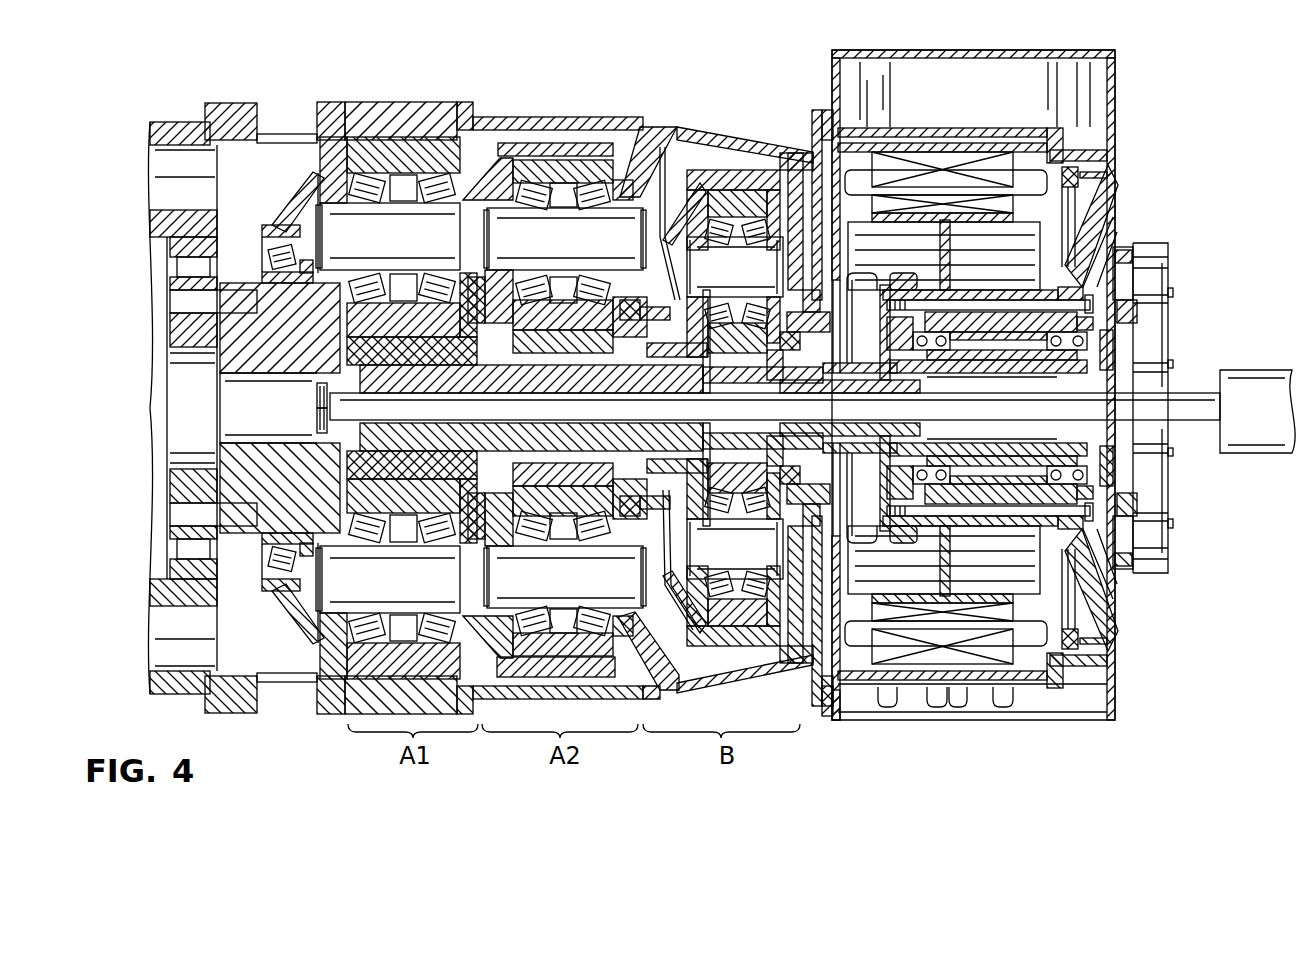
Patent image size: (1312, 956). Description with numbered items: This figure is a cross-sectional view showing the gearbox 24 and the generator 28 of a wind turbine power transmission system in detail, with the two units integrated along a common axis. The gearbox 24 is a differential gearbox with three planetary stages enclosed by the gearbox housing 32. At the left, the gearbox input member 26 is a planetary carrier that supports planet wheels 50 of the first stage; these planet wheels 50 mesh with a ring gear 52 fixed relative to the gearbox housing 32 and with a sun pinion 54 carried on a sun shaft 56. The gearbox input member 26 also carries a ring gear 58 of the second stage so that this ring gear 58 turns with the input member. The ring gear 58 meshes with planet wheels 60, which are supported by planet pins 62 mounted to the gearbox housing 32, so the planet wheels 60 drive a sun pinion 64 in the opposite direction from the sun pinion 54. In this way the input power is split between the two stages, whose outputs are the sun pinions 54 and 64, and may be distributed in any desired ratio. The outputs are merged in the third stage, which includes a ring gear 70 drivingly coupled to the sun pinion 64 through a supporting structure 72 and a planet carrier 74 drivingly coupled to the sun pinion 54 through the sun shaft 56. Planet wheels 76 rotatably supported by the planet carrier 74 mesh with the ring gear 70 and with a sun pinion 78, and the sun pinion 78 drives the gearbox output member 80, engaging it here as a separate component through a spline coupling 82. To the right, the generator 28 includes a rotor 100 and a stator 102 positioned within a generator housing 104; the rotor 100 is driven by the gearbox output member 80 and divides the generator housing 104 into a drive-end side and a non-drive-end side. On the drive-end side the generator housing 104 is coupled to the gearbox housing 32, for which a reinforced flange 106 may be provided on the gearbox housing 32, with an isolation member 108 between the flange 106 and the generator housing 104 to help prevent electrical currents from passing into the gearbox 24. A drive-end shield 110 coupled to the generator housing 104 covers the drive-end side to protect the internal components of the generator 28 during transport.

The gearbox 24 is at (512, 112).
The gearbox input member 26 is at (233, 440).
The generator 28 is at (880, 46).
The gearbox housing 32 is at (548, 117).
The planet wheels 50 is at (345, 107).
The ring gear 52 is at (390, 128).
The sun pinion 54 is at (355, 346).
The sun shaft 56 is at (350, 440).
The ring gear 58 is at (583, 143).
The planet wheels 60 is at (622, 178).
The planet pins 62 is at (565, 239).
The sun pinion 64 is at (578, 490).
The ring gear 70 is at (731, 170).
The supporting structure 72 is at (673, 195).
The planet carrier 74 is at (693, 567).
The planet wheels 76 is at (775, 190).
The sun pinion 78 is at (766, 377).
The gearbox output member 80 is at (712, 400).
The spline coupling 82 is at (735, 395).
The rotor 100 is at (995, 228).
The stator 102 is at (1020, 157).
The generator housing 104 is at (935, 50).
The reinforced flange 106 is at (813, 693).
The isolation member 108 is at (826, 700).
The drive-end shield 110 is at (832, 703).